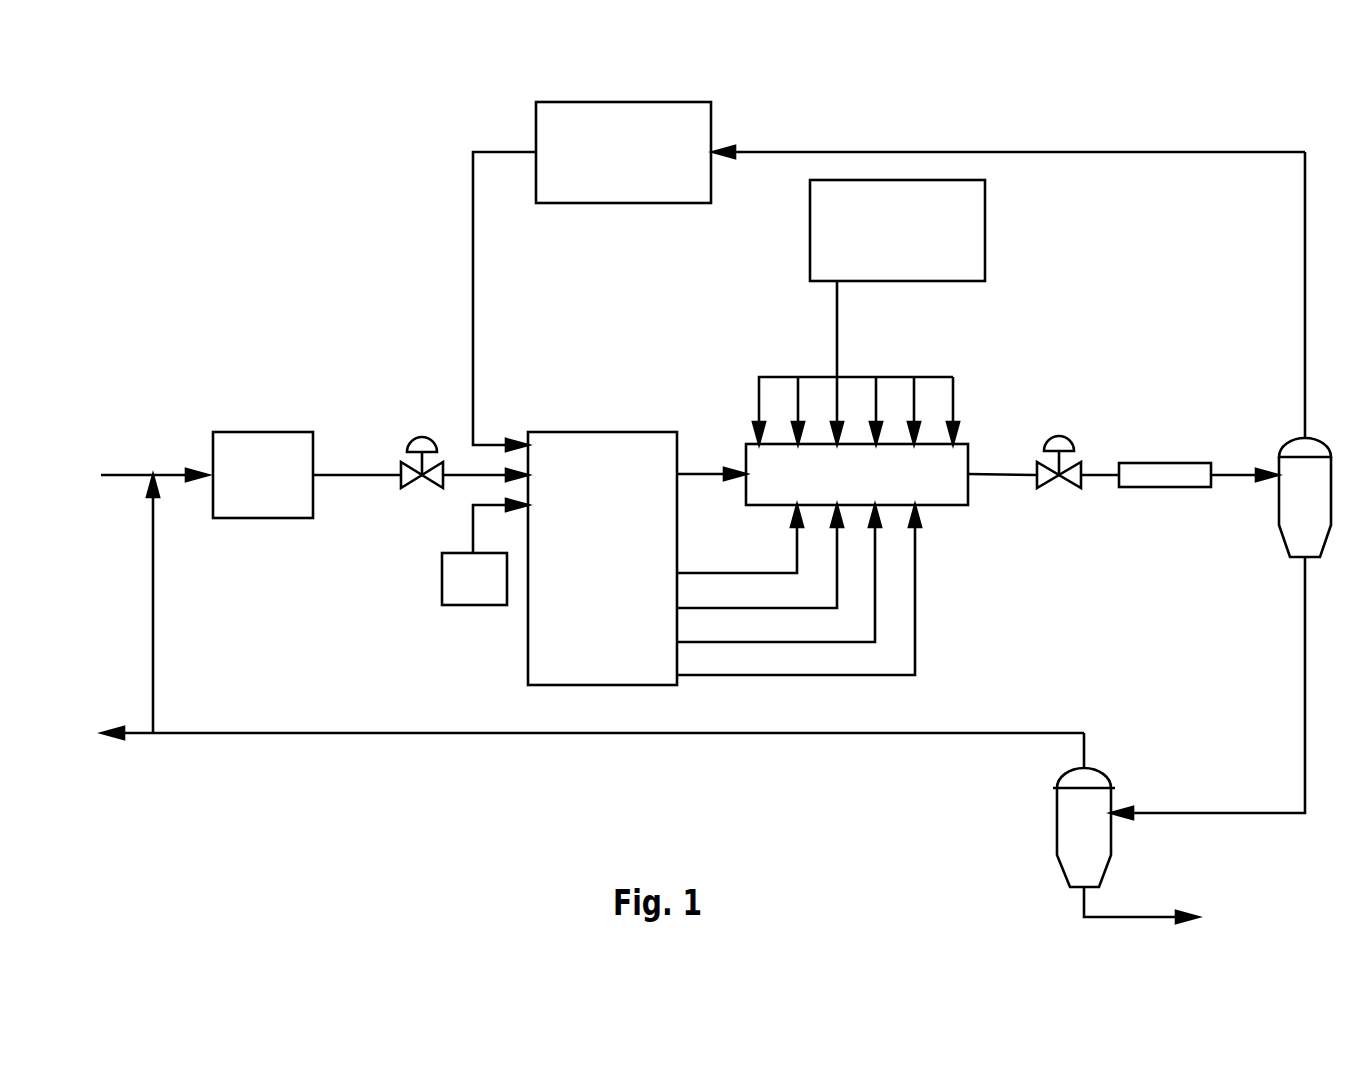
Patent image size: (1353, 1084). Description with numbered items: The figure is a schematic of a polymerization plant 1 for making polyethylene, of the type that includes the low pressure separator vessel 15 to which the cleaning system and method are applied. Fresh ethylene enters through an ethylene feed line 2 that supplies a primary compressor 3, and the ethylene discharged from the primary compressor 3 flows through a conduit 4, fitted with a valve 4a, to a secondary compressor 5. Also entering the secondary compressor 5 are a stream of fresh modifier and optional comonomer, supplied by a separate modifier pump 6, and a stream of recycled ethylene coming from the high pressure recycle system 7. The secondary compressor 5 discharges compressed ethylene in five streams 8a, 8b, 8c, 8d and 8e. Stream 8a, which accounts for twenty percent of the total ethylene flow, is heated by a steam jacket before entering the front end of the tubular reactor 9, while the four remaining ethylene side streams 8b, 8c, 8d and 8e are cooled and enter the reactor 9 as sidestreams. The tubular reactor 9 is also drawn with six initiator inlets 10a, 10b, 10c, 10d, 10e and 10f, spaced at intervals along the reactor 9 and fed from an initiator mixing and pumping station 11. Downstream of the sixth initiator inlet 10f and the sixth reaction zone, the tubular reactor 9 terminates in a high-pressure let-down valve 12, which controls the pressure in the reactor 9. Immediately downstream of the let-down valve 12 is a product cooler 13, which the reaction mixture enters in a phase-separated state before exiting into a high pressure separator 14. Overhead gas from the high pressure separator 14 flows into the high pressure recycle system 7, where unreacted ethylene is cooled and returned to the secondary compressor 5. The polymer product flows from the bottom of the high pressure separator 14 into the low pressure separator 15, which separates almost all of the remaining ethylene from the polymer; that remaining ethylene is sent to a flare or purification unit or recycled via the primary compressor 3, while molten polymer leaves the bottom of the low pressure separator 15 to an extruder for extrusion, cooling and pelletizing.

The polymerization plant 1 is at (270, 255).
The ethylene feed line 2 is at (137, 474).
The primary compressor 3 is at (267, 432).
The conduit 4 is at (363, 473).
The valve 4a is at (420, 438).
The secondary compressor 5 is at (528, 650).
The modifier pump 6 is at (442, 580).
The high pressure recycle system 7 is at (610, 102).
The first ethylene stream 8a is at (703, 474).
The ethylene side stream 8b is at (707, 575).
The ethylene side stream 8c is at (762, 610).
The ethylene side stream 8d is at (828, 644).
The ethylene side stream 8e is at (905, 677).
The tubular reactor 9 is at (945, 507).
The initiator inlet 10a is at (757, 390).
The initiator inlet 10b is at (795, 390).
The initiator inlet 10c is at (833, 392).
The initiator inlet 10d is at (882, 392).
The initiator inlet 10e is at (917, 392).
The sixth initiator inlet 10f is at (953, 393).
The initiator mixing and pumping station 11 is at (985, 230).
The high-pressure let-down valve 12 is at (1060, 438).
The product cooler 13 is at (1163, 487).
The high pressure separator 14 is at (1279, 515).
The low pressure separator vessel 15 is at (1057, 828).